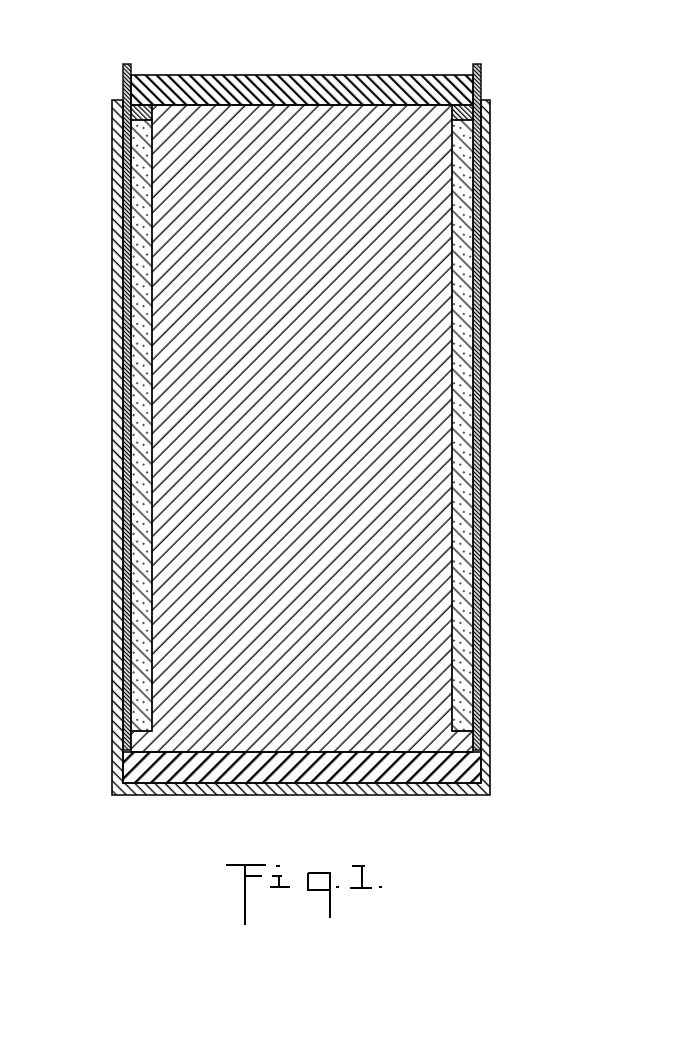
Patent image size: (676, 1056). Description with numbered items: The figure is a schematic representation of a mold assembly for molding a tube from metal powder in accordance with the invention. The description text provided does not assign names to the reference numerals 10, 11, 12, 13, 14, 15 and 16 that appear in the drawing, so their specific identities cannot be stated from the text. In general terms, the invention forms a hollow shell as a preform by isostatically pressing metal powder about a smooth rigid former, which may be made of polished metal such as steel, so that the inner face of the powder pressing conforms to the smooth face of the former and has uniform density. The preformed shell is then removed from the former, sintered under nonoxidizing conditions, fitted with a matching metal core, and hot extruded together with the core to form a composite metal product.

The electrolyte body / cell core 10 is at (415, 598).
The container 11 is at (486, 335).
The electrode strips 12 is at (481, 76).
The separator layers 13 is at (136, 435).
The sealing blocks 14 is at (467, 116).
The bottom plate 15 is at (128, 751).
The top plate / cover 16 is at (178, 75).